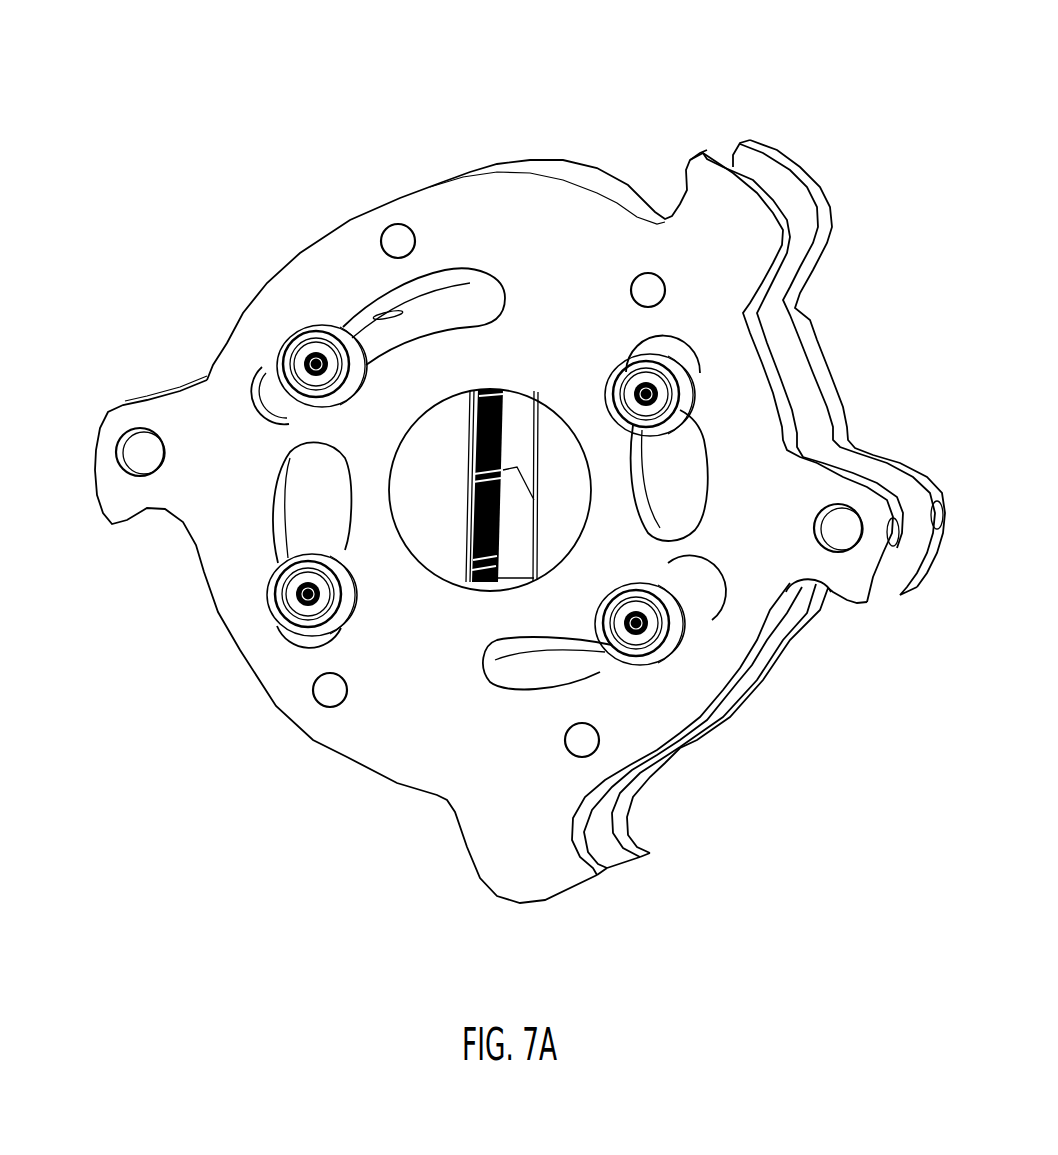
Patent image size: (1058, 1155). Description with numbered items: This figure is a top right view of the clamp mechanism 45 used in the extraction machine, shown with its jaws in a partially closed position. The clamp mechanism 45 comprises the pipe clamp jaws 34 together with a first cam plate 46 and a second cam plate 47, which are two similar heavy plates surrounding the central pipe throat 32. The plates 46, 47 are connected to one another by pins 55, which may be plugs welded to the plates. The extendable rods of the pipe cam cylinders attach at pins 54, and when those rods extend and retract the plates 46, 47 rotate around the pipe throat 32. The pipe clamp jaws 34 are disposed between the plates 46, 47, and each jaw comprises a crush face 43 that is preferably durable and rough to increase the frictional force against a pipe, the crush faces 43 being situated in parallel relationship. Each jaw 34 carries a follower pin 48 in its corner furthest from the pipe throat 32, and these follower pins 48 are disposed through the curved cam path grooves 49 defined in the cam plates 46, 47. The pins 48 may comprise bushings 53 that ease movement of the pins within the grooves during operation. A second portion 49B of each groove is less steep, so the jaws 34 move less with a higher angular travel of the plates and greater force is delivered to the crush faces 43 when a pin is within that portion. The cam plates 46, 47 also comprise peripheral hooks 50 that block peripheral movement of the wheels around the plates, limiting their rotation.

The clamp mechanism 45 is at (333, 100).
The second cam plate 47 is at (388, 717).
The peripheral hooks 50 is at (685, 190).
The first cam plate 46 is at (777, 677).
The pins 54 is at (140, 455).
The pins 55 is at (410, 230).
The pipe clamp jaws 34 is at (438, 452).
The pipe throat 32 is at (470, 517).
The crush face 43 is at (553, 527).
The cam path grooves 49 is at (470, 270).
The second portion 49B is at (700, 517).
The bushings 53 is at (290, 340).
The follower pin 48 is at (313, 343).